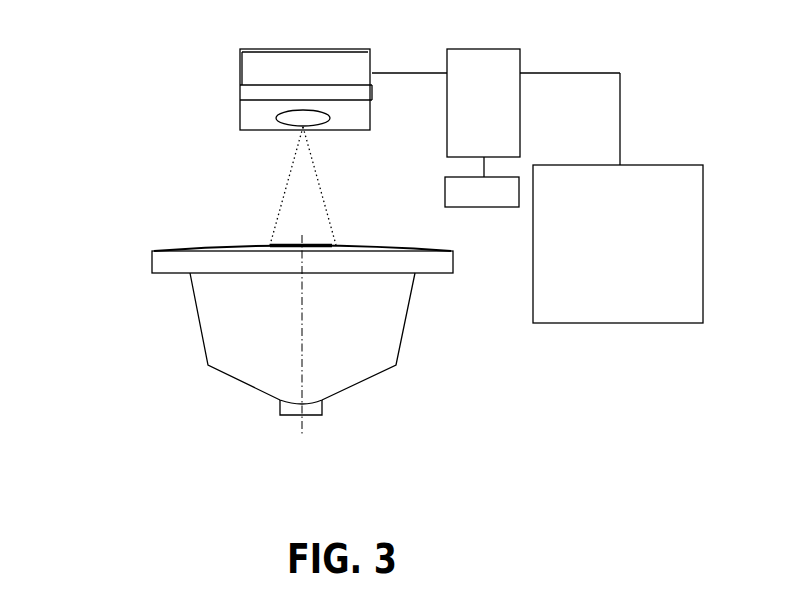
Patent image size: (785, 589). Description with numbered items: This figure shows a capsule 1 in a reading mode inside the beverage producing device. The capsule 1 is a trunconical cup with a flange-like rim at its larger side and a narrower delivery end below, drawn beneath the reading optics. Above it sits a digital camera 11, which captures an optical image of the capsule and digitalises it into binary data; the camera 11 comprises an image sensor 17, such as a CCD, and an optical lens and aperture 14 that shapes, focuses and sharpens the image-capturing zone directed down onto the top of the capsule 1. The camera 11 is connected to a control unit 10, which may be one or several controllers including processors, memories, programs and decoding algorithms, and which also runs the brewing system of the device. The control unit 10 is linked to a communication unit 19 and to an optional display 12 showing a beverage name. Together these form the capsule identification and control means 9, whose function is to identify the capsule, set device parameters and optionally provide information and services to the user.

The capsule 1 is at (155, 322).
The capsule identification and control means 9 is at (653, 63).
The control unit 10 is at (513, 57).
The digital camera 11 is at (240, 80).
The display 12 is at (652, 323).
The optical lens and aperture 14 is at (290, 122).
The image sensor 17 is at (278, 85).
The communication unit 19 is at (445, 192).